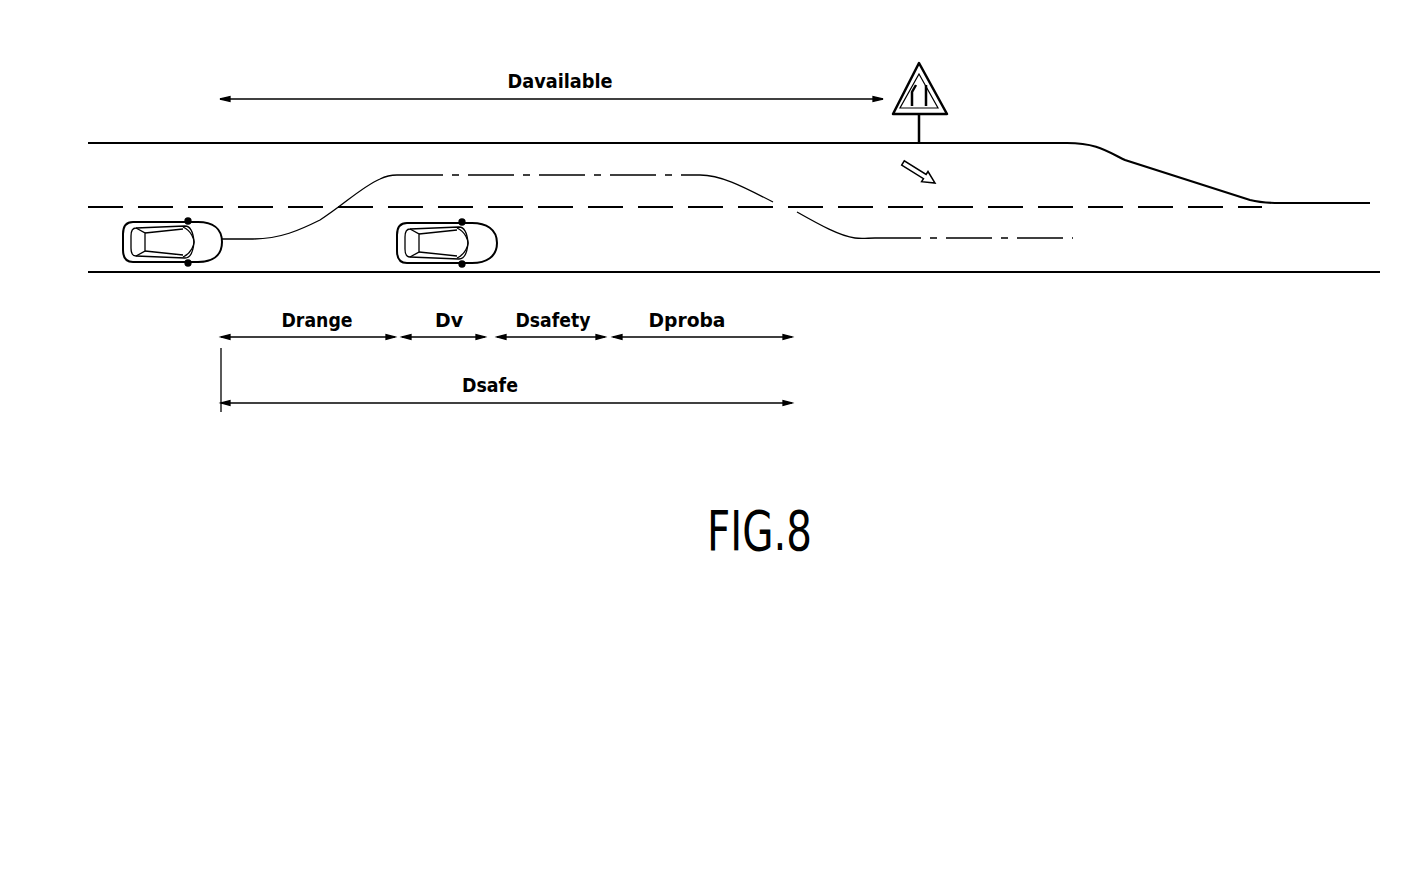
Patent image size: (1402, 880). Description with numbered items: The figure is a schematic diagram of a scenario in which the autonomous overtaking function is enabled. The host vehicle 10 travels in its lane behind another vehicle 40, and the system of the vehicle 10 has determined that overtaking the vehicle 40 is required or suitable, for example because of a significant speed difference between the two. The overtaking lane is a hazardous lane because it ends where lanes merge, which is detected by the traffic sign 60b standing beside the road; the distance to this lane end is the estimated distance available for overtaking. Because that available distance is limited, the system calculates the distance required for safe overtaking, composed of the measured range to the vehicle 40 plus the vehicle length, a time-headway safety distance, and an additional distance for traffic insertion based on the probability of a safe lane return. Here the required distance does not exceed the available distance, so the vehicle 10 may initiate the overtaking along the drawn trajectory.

The host vehicle 10 is at (172, 240).
The another vehicle 40 is at (474, 240).
The traffic sign 60b is at (930, 84).